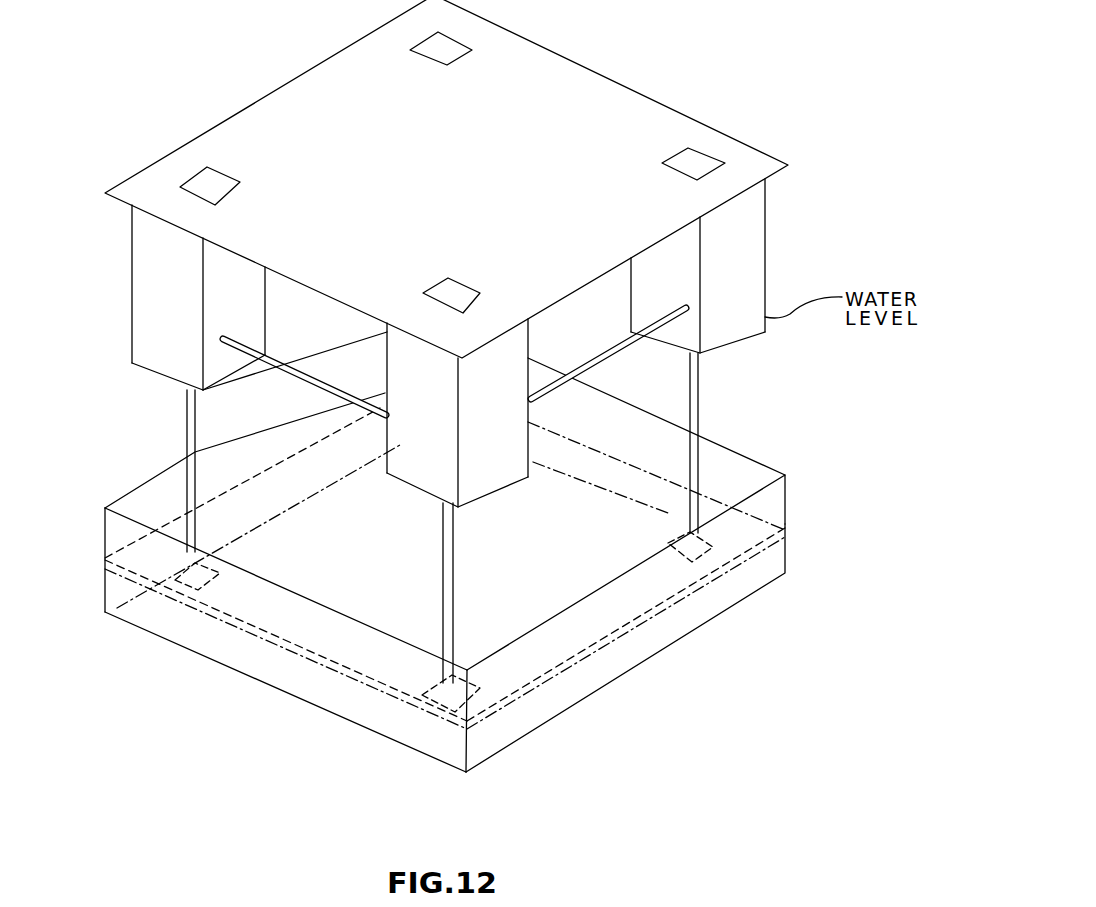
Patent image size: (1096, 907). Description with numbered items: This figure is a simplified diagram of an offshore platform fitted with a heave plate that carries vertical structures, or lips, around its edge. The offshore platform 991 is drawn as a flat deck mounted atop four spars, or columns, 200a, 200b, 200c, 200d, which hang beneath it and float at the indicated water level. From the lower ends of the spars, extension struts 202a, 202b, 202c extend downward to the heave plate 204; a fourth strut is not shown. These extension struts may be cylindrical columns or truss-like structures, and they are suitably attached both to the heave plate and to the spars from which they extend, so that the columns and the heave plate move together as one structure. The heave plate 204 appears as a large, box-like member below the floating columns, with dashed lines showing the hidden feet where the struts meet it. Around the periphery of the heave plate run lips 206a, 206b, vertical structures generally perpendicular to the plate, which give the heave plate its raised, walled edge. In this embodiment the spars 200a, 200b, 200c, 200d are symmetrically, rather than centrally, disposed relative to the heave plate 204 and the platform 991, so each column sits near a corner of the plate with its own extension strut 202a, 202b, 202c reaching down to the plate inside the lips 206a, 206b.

The offshore platform 991 is at (568, 72).
The spar (column) 200a is at (228, 178).
The spar (column) 200b is at (456, 286).
The spar (column) 200c is at (665, 165).
The spar (column) 200d is at (443, 56).
The extension strut 202a is at (187, 414).
The extension strut 202b is at (442, 548).
The extension strut 202c is at (695, 508).
The heave plate 204 is at (781, 538).
The lip (vertical structure) 206a is at (773, 472).
The lip (vertical structure) 206b is at (767, 582).